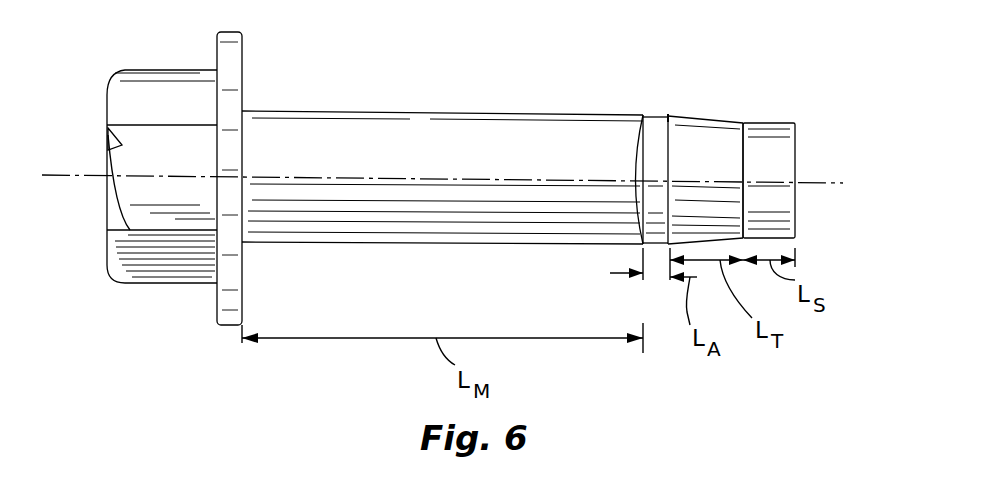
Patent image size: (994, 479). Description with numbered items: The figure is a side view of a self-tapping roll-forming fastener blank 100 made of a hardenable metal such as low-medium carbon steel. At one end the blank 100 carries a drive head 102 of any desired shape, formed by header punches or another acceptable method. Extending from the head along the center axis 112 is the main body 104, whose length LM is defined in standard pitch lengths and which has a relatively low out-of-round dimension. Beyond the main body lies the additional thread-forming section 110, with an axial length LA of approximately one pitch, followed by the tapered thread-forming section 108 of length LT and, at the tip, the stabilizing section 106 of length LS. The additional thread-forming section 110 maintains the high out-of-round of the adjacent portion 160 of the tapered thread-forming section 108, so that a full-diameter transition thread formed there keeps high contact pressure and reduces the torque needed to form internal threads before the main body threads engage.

The fastener blank 100 is at (500, 88).
The drive head 102 is at (163, 82).
The main body 104 is at (400, 244).
The stabilizing section 106 is at (767, 125).
The tapered thread-forming section 108 is at (707, 118).
The additional thread-forming section 110 is at (657, 125).
The center axis 112 is at (818, 183).
The adjacent portion of the tapered thread-forming section 160 is at (670, 118).